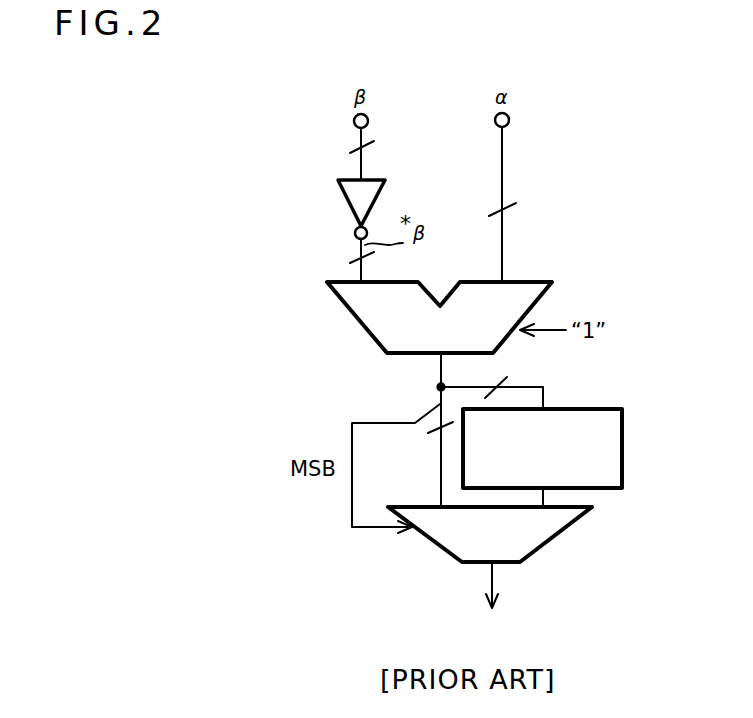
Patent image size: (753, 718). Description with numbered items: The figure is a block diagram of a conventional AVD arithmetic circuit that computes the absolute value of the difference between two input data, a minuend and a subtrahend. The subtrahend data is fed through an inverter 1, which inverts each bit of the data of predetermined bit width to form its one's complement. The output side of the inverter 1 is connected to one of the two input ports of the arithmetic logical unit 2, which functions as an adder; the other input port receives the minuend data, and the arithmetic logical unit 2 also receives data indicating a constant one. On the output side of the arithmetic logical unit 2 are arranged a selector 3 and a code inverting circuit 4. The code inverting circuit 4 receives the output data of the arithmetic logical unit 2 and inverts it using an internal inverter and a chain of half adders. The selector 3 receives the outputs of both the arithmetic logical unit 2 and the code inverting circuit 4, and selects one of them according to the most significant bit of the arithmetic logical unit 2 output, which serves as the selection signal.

The inverter 1 is at (344, 194).
The arithmetic logical unit (ALU) 2 is at (345, 309).
The selector 3 is at (572, 525).
The code inverting circuit 4 is at (622, 458).